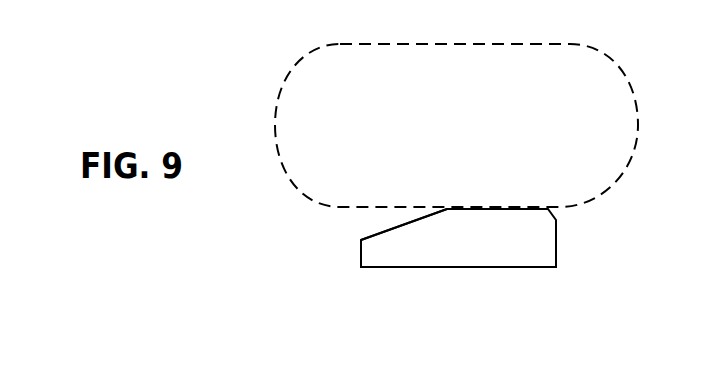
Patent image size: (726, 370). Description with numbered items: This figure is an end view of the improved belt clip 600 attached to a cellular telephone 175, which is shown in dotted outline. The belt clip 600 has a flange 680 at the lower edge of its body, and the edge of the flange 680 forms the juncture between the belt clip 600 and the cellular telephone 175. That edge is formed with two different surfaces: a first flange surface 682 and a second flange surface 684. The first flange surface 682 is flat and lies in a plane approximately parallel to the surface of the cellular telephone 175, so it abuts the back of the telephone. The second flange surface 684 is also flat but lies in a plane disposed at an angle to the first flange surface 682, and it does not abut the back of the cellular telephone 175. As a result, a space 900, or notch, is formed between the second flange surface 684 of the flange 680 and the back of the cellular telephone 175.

The cellular telephone 175 is at (605, 83).
The improved belt clip 600 is at (602, 249).
The flange 680 is at (490, 252).
The first flange surface 682 is at (493, 208).
The second flange surface 684 is at (384, 232).
The space 900 is at (278, 248).